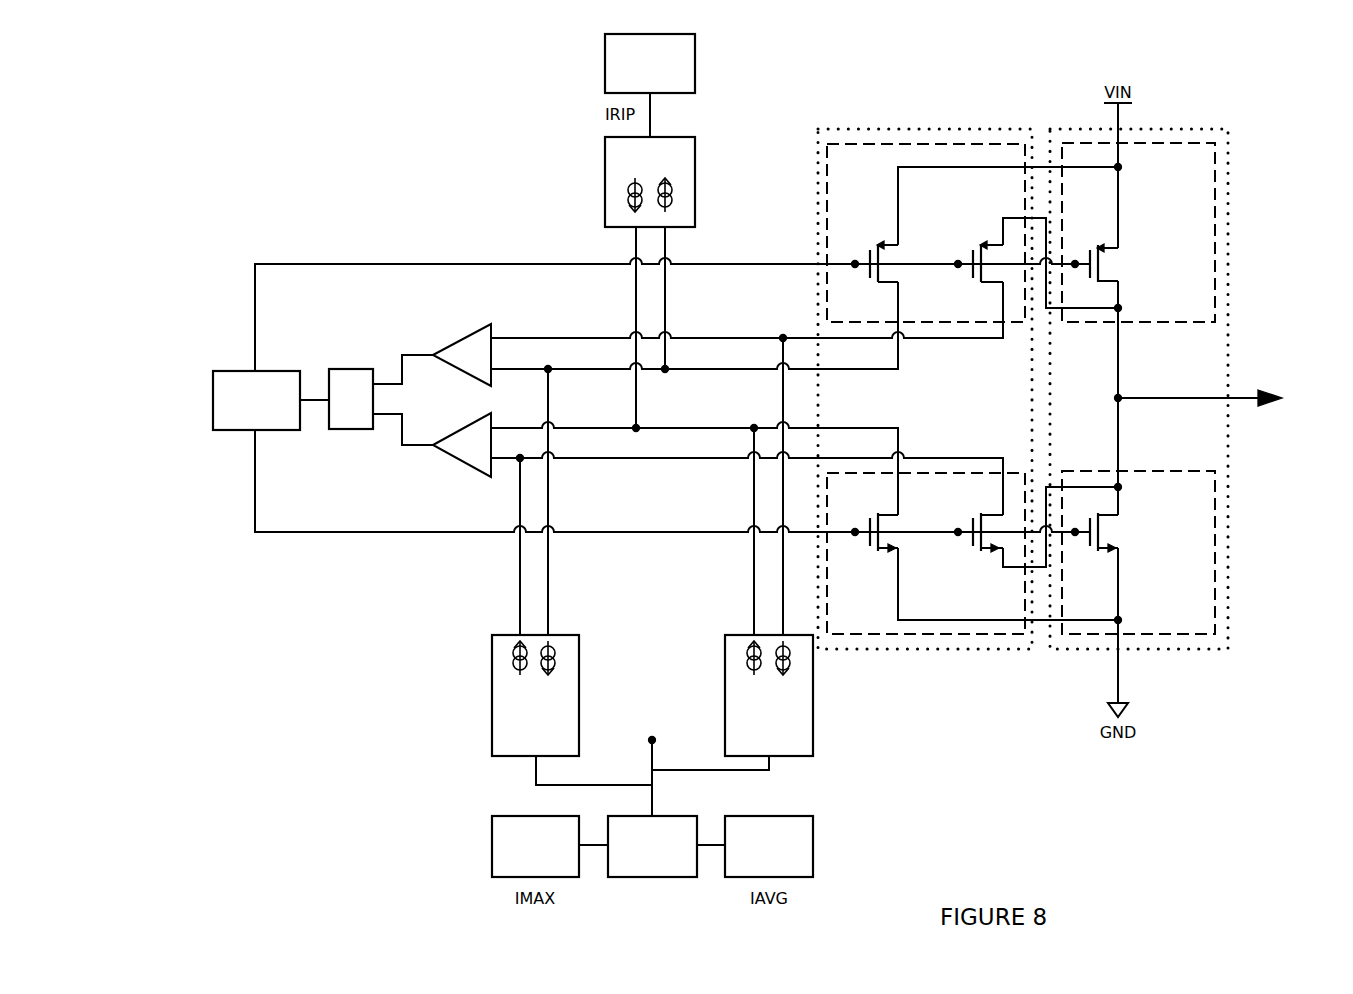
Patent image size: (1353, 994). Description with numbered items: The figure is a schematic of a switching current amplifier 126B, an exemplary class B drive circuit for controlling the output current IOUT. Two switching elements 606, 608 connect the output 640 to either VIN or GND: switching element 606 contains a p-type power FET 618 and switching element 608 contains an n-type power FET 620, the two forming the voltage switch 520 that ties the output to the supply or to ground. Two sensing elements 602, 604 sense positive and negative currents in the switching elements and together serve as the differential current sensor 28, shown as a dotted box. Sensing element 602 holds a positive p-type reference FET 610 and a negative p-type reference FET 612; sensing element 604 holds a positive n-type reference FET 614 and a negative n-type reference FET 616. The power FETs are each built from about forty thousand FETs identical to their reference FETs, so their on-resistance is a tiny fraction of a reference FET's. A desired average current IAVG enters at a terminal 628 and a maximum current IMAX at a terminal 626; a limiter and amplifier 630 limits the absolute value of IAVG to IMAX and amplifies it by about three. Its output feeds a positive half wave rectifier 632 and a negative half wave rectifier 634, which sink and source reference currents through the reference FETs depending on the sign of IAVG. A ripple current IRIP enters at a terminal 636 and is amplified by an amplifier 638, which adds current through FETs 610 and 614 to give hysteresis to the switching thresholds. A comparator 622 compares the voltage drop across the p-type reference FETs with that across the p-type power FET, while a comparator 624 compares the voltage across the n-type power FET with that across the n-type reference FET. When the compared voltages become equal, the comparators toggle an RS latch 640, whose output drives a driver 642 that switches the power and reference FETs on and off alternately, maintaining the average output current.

The switching current amplifier 126B is at (267, 196).
The terminal 636 is at (695, 40).
The amplifier 638 is at (695, 160).
The driver 642 is at (213, 401).
The R S latch / output 640 is at (354, 369).
The comparator 622 is at (468, 338).
The comparator 624 is at (468, 470).
The differential current sensor 28 is at (878, 126).
The switching element 606 is at (1085, 143).
The sensing element 602 is at (827, 194).
The sensing element 604 is at (978, 634).
The positive p-type reference FET 610 is at (874, 283).
The negative p-type reference FET 612 is at (977, 283).
The positive n-type reference FET 614 is at (874, 516).
The negative n-type reference FET 616 is at (977, 516).
The voltage switch 520 is at (1230, 205).
The switching element 608 is at (1170, 642).
The p-type power FET 618 is at (1096, 249).
The n-type power FET 620 is at (1098, 550).
The positive half wave rectifier 632 is at (492, 740).
The negative half wave rectifier 634 is at (813, 740).
The limiter and amplifier 630 is at (665, 816).
The terminal 626 is at (492, 855).
The terminal 628 is at (813, 855).